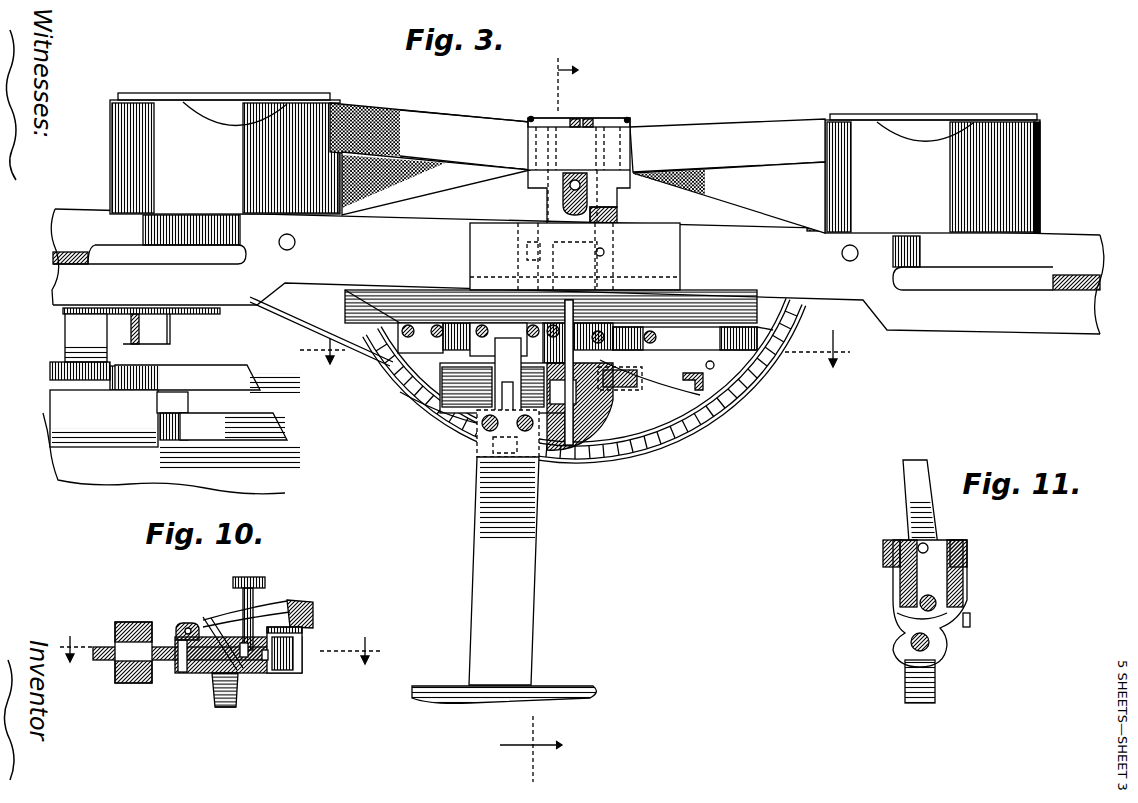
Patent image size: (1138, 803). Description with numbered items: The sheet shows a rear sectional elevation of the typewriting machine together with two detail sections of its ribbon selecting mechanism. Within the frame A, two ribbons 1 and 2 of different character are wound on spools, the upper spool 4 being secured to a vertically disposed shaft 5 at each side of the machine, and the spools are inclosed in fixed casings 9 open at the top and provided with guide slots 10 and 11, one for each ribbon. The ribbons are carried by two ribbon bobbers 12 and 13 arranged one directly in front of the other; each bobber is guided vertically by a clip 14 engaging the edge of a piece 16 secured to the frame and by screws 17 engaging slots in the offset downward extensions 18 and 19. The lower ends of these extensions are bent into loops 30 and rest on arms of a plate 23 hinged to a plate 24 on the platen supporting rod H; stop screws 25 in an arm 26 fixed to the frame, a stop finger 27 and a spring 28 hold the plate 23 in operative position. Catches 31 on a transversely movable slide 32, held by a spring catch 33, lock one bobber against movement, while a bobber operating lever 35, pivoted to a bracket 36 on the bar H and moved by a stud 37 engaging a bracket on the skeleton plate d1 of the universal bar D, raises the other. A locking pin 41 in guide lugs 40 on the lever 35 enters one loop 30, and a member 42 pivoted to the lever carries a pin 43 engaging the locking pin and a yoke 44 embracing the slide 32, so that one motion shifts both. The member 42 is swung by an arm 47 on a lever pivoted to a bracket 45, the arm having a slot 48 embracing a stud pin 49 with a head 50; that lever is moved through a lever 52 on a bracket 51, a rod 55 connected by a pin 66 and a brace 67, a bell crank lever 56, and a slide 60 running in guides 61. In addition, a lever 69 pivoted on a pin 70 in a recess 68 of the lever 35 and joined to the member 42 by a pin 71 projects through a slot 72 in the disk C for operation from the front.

In FIG. 3, the ribbon 1 is at (460, 180).
In FIG. 3, the ribbon 2 is at (460, 128).
In FIG. 3, the spool 4 is at (962, 112).
In FIG. 3, the shaft 5 is at (589, 350).
In FIG. 3, the casing 9 is at (575, 163).
In FIG. 3, the guide slot 10 is at (331, 101).
In FIG. 10, the guide slot 11 is at (219, 647).
In FIG. 3, the ribbon bobber 12 is at (534, 117).
In FIG. 3, the ribbon bobber 13 is at (576, 120).
In FIG. 3, the clip 14 is at (558, 212).
In FIG. 3, the piece 16 is at (619, 215).
In FIG. 3, the screw 17 is at (527, 250).
In FIG. 3, the downward extension 18 is at (470, 272).
In FIG. 3, the downward extension 19 is at (680, 272).
In FIG. 3, the plate 23 is at (511, 392).
In FIG. 3, the plate 24 is at (442, 322).
In FIG. 3, the stop screw 25 is at (478, 455).
In FIG. 3, the arm 26 is at (540, 533).
In FIG. 3, the stop finger 27 is at (500, 375).
In FIG. 3, the spring 28 is at (487, 430).
In FIG. 3, the hole or loop 30 is at (603, 372).
In FIG. 3, the catch 31 is at (720, 392).
In FIG. 3, the slide 32 is at (696, 452).
In FIG. 3, the spring catch 33 is at (641, 452).
In FIG. 3, the bobber operating lever 35 is at (636, 493).
In FIG. 10, the bobber operating lever 35 is at (232, 707).
In FIG. 11, the bobber operating lever 35 is at (937, 680).
In FIG. 3, the bracket 36 is at (620, 332).
In FIG. 3, the stud 37 is at (573, 330).
In FIG. 10, the guide lug 40 is at (186, 626).
In FIG. 11, the guide lug 40 is at (883, 551).
In FIG. 10, the locking pin 41 is at (245, 579).
In FIG. 10, the member 42 is at (310, 642).
In FIG. 10, the pin or arm 43 is at (246, 666).
In FIG. 3, the yoke 44 is at (705, 386).
In FIG. 3, the bracket 45 is at (514, 323).
In FIG. 10, the arm 47 is at (330, 611).
In FIG. 10, the slot 48 is at (318, 603).
In FIG. 10, the stud pin 49 is at (292, 602).
In FIG. 10, the head 50 is at (266, 580).
In FIG. 3, the bracket 51 is at (551, 302).
In FIG. 3, the lever 52 is at (321, 331).
In FIG. 3, the rod or bar 55 is at (65, 339).
In FIG. 3, the bell crank lever 56 is at (62, 370).
In FIG. 3, the slide 60 is at (177, 415).
In FIG. 3, the guide 61 is at (276, 432).
In FIG. 3, the pin 66 is at (140, 333).
In FIG. 3, the brace or bracket 67 is at (168, 350).
In FIG. 10, the slot or recess 68 is at (205, 673).
In FIG. 11, the slot or recess 68 is at (908, 576).
In FIG. 10, the lever 69 is at (178, 634).
In FIG. 11, the lever 69 is at (938, 521).
In FIG. 10, the pin or stud 70 is at (180, 662).
In FIG. 11, the pin or stud 70 is at (930, 548).
In FIG. 10, the pin 71 is at (222, 628).
In FIG. 11, the pin 71 is at (940, 603).
In FIG. 10, the slot 72 is at (126, 628).
In FIG. 3, the frame A is at (97, 487).
In FIG. 3, the disk C is at (723, 407).
In FIG. 10, the disk C is at (115, 662).
In FIG. 3, the universal bar D is at (772, 296).
In FIG. 3, the rod or bar H is at (773, 332).
In FIG. 3, the skeleton plate d1 is at (455, 396).